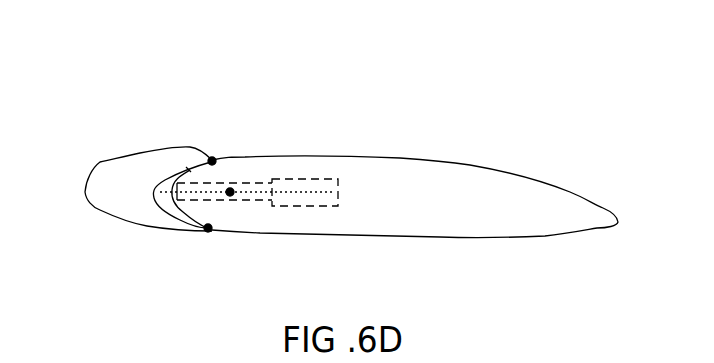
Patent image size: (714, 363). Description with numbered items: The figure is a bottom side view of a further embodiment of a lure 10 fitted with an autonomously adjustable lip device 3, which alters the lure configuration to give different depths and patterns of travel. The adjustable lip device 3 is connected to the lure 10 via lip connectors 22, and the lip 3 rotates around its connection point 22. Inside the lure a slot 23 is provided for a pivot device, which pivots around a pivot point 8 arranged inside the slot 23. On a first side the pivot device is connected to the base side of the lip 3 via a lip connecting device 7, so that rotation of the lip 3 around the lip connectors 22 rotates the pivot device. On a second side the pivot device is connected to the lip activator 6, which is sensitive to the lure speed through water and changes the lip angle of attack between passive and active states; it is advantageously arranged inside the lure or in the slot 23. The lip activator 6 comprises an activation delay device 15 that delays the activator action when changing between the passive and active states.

The lure 10 is at (258, 85).
The adjustable lip device 3 is at (110, 192).
The lip connecting device 7 is at (166, 196).
The lip connectors 22 is at (211, 157).
The slot 23 is at (263, 203).
The lip activator 6 is at (312, 152).
The activation delay device 15 is at (325, 179).
The pivot point 8 is at (230, 188).